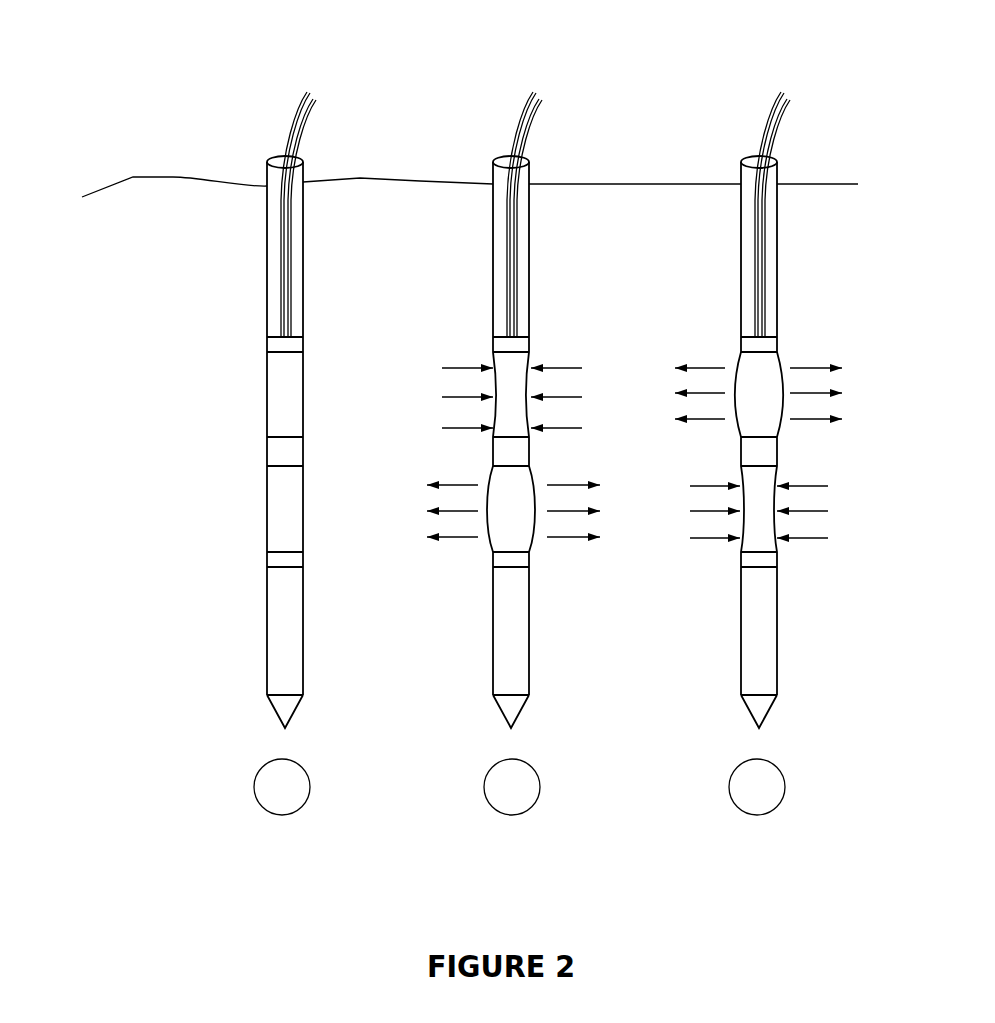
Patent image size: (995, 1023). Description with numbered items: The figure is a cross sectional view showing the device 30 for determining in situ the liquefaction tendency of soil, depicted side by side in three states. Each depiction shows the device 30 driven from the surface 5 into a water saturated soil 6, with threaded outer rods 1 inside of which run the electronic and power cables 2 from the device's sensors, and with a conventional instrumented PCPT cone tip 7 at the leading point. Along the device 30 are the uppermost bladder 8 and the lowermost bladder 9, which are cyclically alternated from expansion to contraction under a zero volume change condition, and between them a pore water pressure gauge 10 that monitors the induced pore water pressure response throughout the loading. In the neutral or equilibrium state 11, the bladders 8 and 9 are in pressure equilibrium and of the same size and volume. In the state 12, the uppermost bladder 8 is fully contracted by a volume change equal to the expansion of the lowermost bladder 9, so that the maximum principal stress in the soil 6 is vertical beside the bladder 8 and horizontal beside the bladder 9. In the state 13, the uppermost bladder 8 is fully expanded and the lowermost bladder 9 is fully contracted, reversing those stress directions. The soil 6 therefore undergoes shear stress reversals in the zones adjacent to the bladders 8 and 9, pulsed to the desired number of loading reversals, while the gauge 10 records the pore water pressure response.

The threaded outer rods 1 is at (298, 150).
The electronic and power cables 2 is at (293, 97).
The surface 5 is at (200, 108).
The water saturated soil 6 is at (168, 372).
The PCPT cone tip 7 is at (270, 705).
The uppermost bladder 8 is at (277, 373).
The lowermost bladder 9 is at (266, 485).
The pore water pressure gauge 10 is at (267, 459).
The neutral or equilibrium state 11 is at (282, 787).
The state with bladder 8 contracted and bladder 9 expanded 12 is at (512, 787).
The state with bladder 8 expanded and bladder 9 contracted 13 is at (757, 787).
The device 30 is at (328, 312).